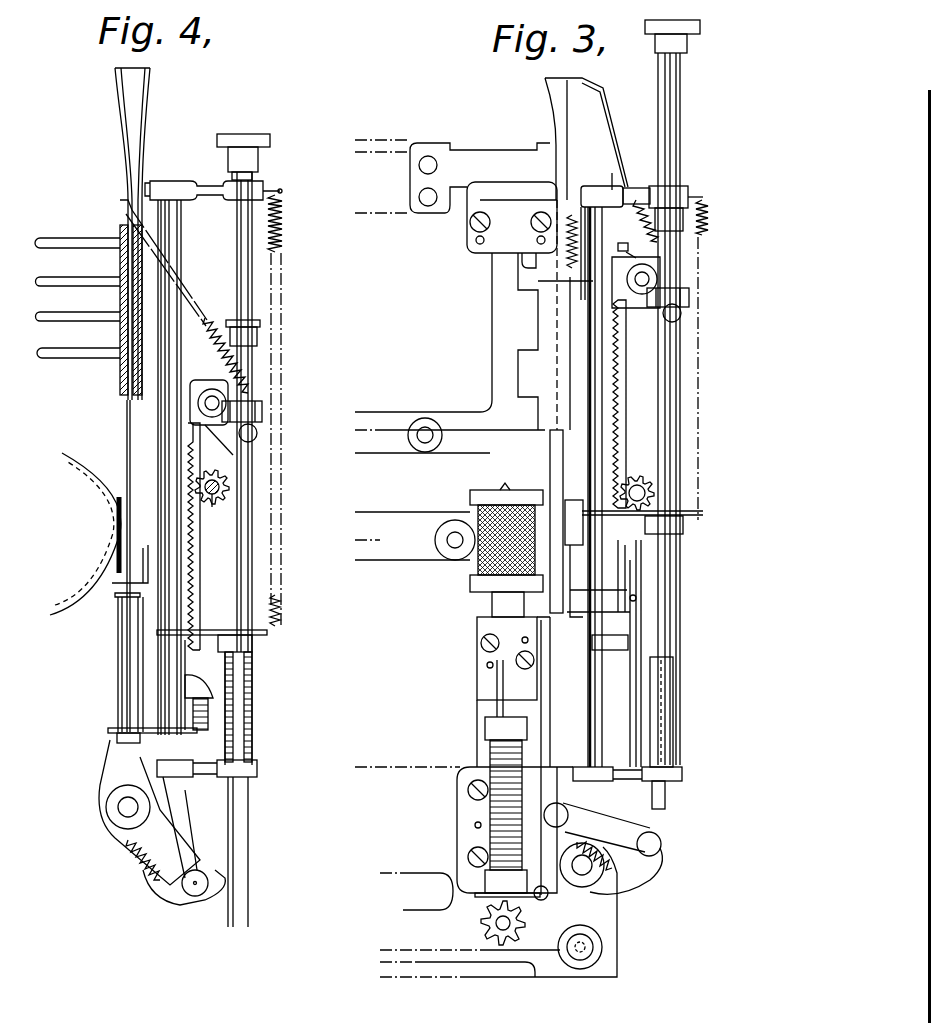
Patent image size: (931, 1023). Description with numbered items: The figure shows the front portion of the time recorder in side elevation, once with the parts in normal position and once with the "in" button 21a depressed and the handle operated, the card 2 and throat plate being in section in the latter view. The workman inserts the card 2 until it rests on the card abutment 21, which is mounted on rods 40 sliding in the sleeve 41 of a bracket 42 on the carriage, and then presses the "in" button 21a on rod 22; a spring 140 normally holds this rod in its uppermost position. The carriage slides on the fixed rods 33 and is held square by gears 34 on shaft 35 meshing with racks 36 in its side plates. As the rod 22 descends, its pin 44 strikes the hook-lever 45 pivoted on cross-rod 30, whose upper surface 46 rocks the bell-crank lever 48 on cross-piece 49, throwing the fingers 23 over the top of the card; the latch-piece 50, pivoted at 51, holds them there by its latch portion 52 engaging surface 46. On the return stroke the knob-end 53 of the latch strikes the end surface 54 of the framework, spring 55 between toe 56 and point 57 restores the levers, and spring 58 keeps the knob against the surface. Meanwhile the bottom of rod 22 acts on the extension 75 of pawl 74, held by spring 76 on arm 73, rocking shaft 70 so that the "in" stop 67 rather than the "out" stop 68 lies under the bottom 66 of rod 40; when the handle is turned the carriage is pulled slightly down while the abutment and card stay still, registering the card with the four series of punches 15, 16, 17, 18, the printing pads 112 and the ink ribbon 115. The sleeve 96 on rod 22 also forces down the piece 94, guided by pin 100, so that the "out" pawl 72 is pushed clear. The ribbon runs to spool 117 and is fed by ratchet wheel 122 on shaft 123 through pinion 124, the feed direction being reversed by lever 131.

In FIG. 4, the card 2 is at (126, 437).
In FIG. 3, the card 2 is at (557, 367).
In FIG. 4, the tens of hours punches 15 is at (88, 238).
In FIG. 4, the hours punches 16 is at (88, 277).
In FIG. 4, the tens of minutes punches 17 is at (88, 312).
In FIG. 4, the digits of minutes punches 18 is at (84, 348).
In FIG. 4, the card abutment 21 is at (142, 583).
In FIG. 4, the "in" button 21a is at (243, 134).
In FIG. 3, the "in" button 21a is at (697, 36).
In FIG. 4, the rod 22 is at (255, 270).
In FIG. 3, the rod 22 is at (681, 117).
In FIG. 4, the fingers 23 is at (187, 305).
In FIG. 3, the fingers 23 is at (609, 108).
In FIG. 4, the cross-rod 30 is at (216, 403).
In FIG. 3, the cross-rod 30 is at (690, 297).
In FIG. 4, the fixed rods 33 is at (178, 218).
In FIG. 3, the fixed rods 33 is at (677, 407).
In FIG. 4, the gears 34 is at (228, 487).
In FIG. 3, the gears 34 is at (654, 490).
In FIG. 4, the shaft 35 is at (213, 507).
In FIG. 3, the shaft 35 is at (638, 485).
In FIG. 4, the racks 36 is at (196, 590).
In FIG. 3, the racks 36 is at (622, 402).
In FIG. 4, the rods 40 is at (128, 622).
In FIG. 3, the sleeve 41 is at (636, 240).
In FIG. 4, the bracket 42 is at (140, 653).
In FIG. 4, the pin 44 is at (265, 410).
In FIG. 3, the pin 44 is at (700, 310).
In FIG. 4, the hook-lever 45 is at (258, 435).
In FIG. 3, the hook-lever 45 is at (681, 318).
In FIG. 4, the upper surface 46 is at (222, 383).
In FIG. 3, the upper surface 46 is at (636, 257).
In FIG. 3, the bell-crank lever 48 is at (652, 205).
In FIG. 3, the cross-piece 49 is at (595, 216).
In FIG. 3, the latch-piece 50 is at (560, 298).
In FIG. 3, the pivot 51 is at (641, 329).
In FIG. 3, the latch portion 52 is at (660, 250).
In FIG. 3, the knob-end 53 is at (527, 262).
In FIG. 3, the end surface 54 is at (487, 256).
In FIG. 3, the spring 55 is at (705, 198).
In FIG. 3, the toe 56 is at (680, 265).
In FIG. 3, the point 57 is at (626, 205).
In FIG. 3, the spring 58 is at (510, 233).
In FIG. 4, the bottom of rod 66 is at (118, 730).
In FIG. 4, the "in" stop 67 is at (115, 738).
In FIG. 4, the "out" stop 68 is at (160, 765).
In FIG. 4, the shaft 70 is at (122, 808).
In FIG. 3, the shaft 70 is at (566, 811).
In FIG. 4, the "out" pawl 72 is at (183, 807).
In FIG. 3, the arm 73 is at (606, 820).
In FIG. 4, the pawl 74 is at (178, 893).
In FIG. 3, the pawl 74 is at (630, 872).
In FIG. 4, the extension 75 is at (210, 885).
In FIG. 3, the extension 75 is at (663, 840).
In FIG. 4, the spring 76 is at (135, 862).
In FIG. 3, the spring 76 is at (606, 852).
In FIG. 4, the piece 94 is at (208, 718).
In FIG. 4, the sleeve 96 is at (255, 645).
In FIG. 3, the sleeve 96 is at (690, 528).
In FIG. 3, the pin 100 is at (640, 600).
In FIG. 3, the printing pads 112 is at (560, 495).
In FIG. 4, the ink ribbon 115 is at (118, 506).
In FIG. 3, the ink ribbon 115 is at (498, 565).
In FIG. 3, the spool 117 is at (480, 490).
In FIG. 3, the ratchet wheel 122 is at (523, 917).
In FIG. 3, the shaft 123 is at (497, 925).
In FIG. 3, the pinion 124 is at (503, 683).
In FIG. 3, the lever 131 is at (540, 712).
In FIG. 4, the springs 140 is at (285, 215).
In FIG. 3, the springs 140 is at (710, 215).